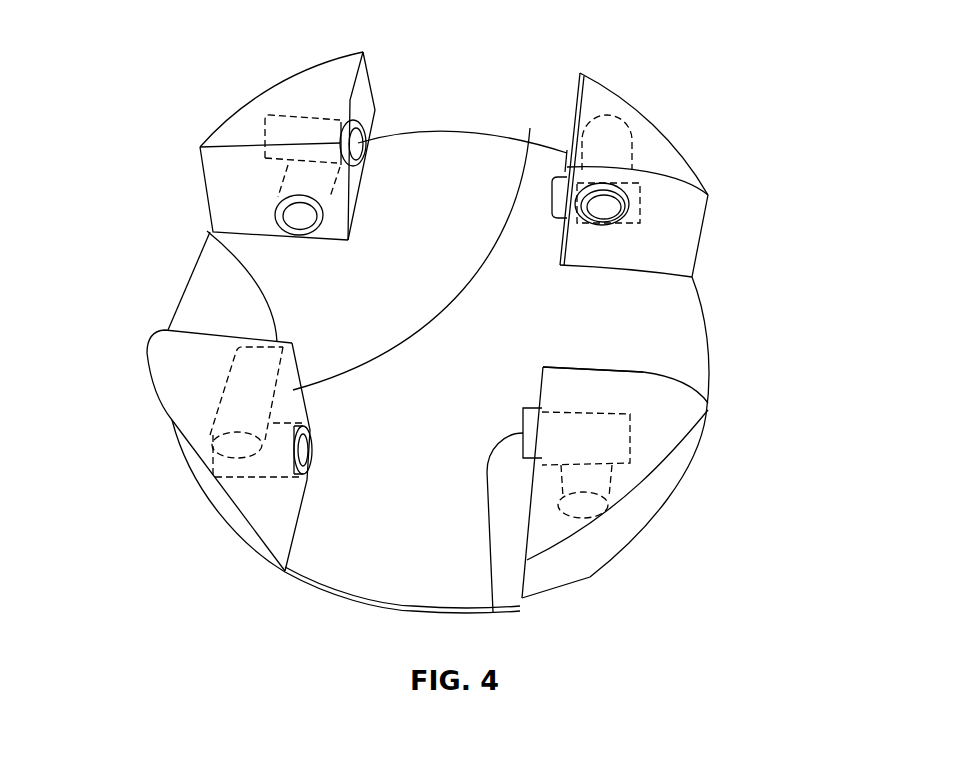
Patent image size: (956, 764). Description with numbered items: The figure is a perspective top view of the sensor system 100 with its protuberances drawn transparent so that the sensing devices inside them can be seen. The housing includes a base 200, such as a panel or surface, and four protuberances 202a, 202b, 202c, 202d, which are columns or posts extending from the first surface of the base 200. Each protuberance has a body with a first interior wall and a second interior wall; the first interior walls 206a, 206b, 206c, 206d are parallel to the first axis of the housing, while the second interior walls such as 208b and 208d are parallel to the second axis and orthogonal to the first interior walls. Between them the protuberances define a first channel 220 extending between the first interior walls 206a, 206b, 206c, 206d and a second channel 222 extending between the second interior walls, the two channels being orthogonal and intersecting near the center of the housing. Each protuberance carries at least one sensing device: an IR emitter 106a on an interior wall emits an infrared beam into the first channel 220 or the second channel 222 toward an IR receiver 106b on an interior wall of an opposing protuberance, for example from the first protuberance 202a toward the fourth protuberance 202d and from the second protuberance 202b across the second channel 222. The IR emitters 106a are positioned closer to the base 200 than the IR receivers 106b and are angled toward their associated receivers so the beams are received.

The sensor system 100 is at (138, 36).
The base 200 is at (427, 592).
The first channel 220 is at (700, 321).
The second channel 222 is at (489, 101).
The first protuberance 202a is at (297, 73).
The second protuberance 202b is at (667, 133).
The third protuberance 202c is at (677, 470).
The fourth protuberance 202d is at (228, 505).
The first interior wall 206a is at (240, 162).
The first interior wall 206b is at (667, 230).
The first interior wall 206c is at (645, 373).
The first interior wall 206d is at (215, 258).
The second interior wall 208b is at (360, 80).
The second interior wall 208d is at (567, 155).
The IR emitter 106a is at (300, 216).
The IR receiver 106b is at (357, 143).